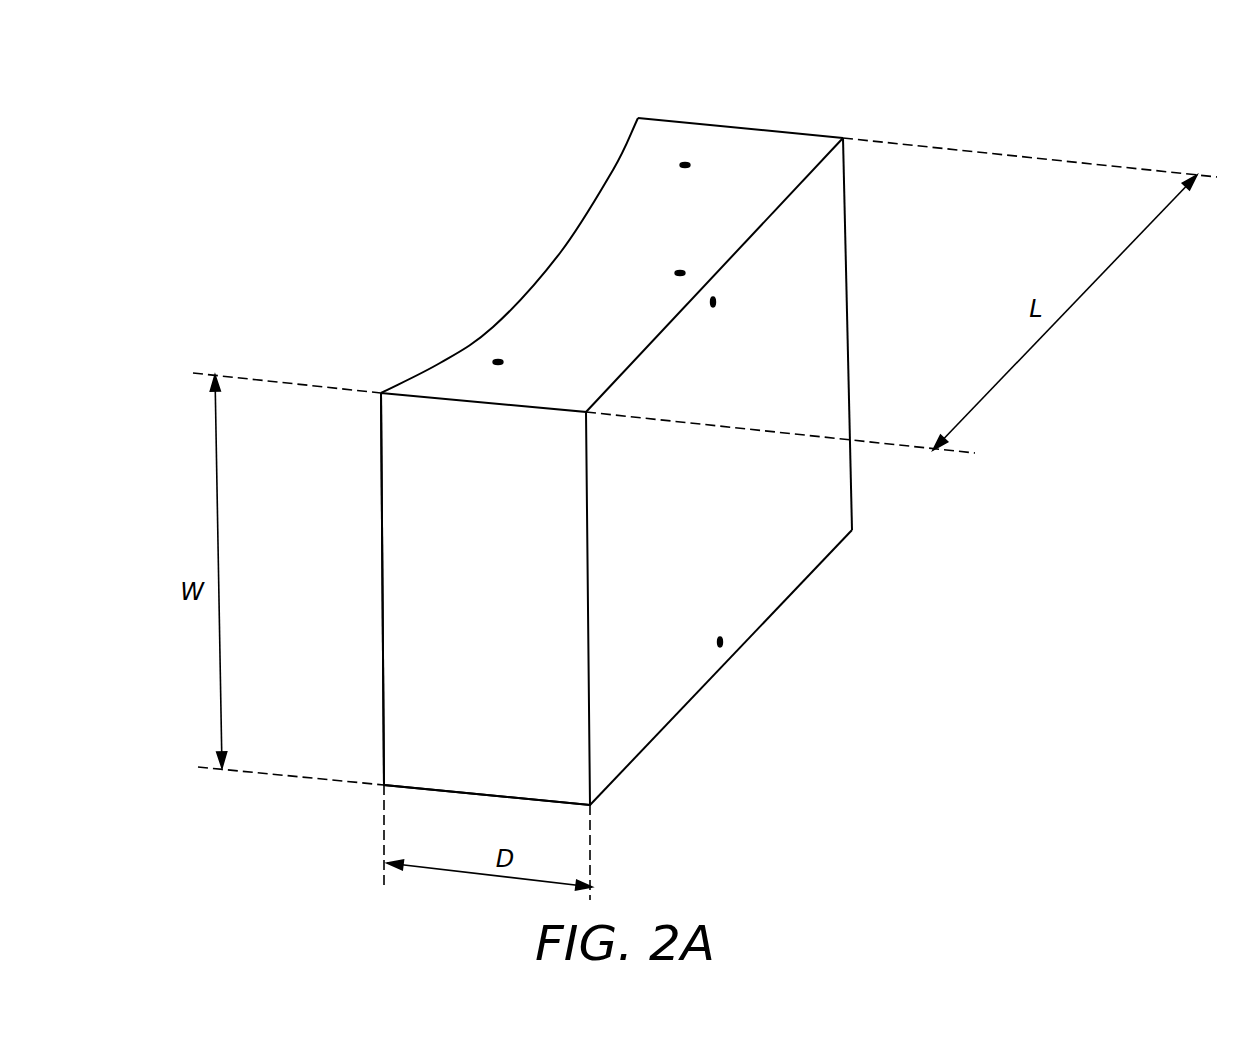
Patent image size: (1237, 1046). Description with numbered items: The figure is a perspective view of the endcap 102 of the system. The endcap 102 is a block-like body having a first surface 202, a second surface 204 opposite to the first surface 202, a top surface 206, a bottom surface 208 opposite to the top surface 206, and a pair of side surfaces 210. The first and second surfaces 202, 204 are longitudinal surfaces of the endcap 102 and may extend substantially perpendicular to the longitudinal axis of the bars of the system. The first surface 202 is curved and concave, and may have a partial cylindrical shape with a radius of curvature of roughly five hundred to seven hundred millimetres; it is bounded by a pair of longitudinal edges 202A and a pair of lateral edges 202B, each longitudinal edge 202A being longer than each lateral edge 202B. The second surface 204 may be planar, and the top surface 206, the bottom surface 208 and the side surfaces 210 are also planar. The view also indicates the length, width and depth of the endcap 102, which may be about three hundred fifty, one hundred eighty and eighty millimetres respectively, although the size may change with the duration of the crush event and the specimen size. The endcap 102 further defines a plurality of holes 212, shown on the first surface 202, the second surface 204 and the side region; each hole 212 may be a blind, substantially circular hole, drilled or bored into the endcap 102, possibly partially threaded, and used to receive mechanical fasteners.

The endcap 102 is at (633, 448).
The first surface 202 is at (633, 448).
The longitudinal edges 202A is at (623, 157).
The lateral edges 202B is at (379, 420).
The second surface 204 is at (830, 351).
The top surface 206 is at (773, 157).
The bottom surface 208 is at (463, 793).
The side surfaces 210 is at (410, 610).
The holes 212 is at (685, 165).